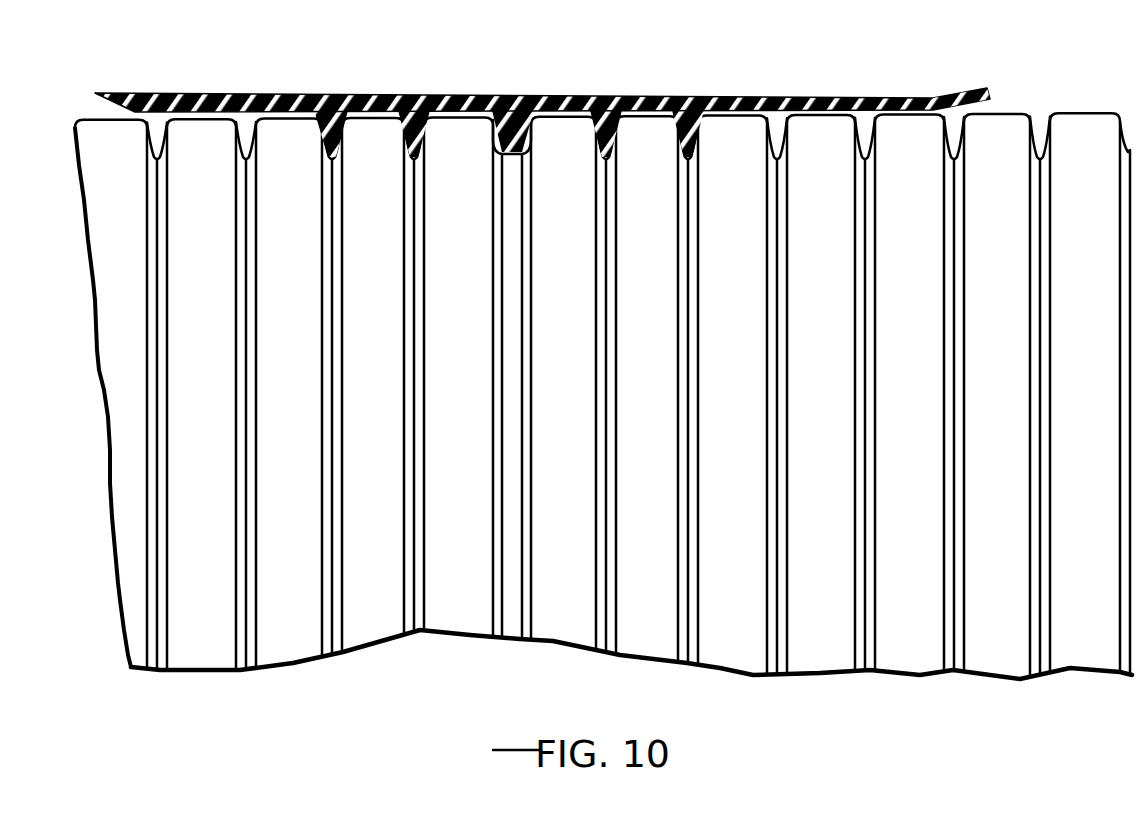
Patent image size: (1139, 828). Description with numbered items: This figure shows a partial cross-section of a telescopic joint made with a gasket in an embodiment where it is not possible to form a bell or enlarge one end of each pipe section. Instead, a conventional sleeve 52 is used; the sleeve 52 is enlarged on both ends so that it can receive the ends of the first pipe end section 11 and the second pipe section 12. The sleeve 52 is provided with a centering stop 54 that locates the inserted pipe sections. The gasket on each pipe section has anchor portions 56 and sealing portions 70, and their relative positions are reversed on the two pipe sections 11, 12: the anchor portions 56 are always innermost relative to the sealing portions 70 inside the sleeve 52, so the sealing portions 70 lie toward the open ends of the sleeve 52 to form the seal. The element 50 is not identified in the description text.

The first pipe end section 11 is at (1084, 113).
The second pipe section 12 is at (370, 617).
The tape 50 is at (938, 98).
The sleeve 52 is at (652, 98).
The centering stop 54 is at (510, 625).
The anchor portions 56 is at (430, 144).
The sealing portions 70 is at (320, 152).